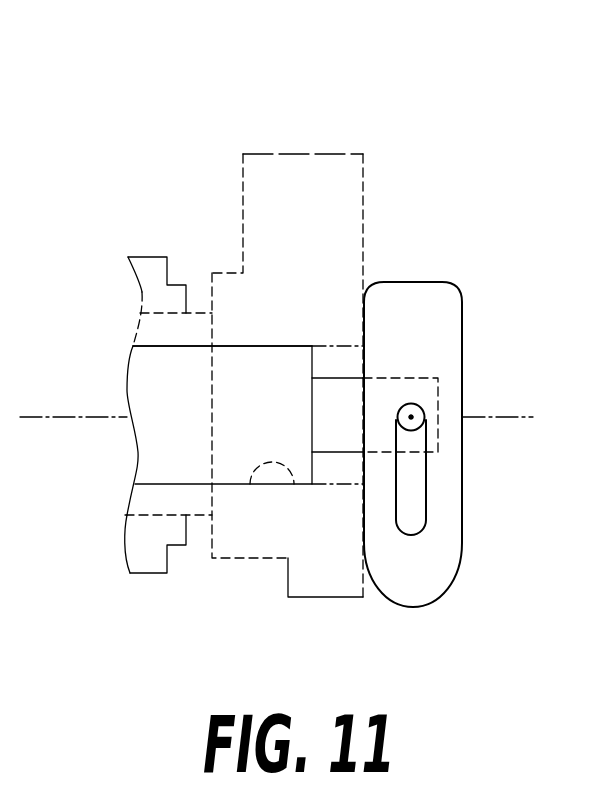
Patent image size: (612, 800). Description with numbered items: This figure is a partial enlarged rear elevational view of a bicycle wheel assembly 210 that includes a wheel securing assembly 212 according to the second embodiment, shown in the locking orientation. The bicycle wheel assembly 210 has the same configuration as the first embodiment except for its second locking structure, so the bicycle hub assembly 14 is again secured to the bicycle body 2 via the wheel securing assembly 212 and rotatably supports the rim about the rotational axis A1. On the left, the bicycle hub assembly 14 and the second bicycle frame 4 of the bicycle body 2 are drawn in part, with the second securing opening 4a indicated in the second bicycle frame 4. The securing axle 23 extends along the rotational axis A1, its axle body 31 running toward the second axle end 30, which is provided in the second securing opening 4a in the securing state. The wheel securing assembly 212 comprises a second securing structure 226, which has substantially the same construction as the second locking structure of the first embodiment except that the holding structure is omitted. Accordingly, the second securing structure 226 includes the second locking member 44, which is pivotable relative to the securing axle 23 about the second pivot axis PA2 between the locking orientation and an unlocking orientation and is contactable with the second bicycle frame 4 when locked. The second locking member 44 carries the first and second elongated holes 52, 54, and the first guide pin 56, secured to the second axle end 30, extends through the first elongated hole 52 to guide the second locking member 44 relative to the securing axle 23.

The bicycle wheel assembly 210 is at (153, 92).
The wheel securing assembly 212 is at (528, 196).
The bicycle body 2 is at (275, 140).
The second bicycle frame 4 is at (243, 171).
The second securing opening 4a is at (250, 484).
The bicycle hub assembly 14 is at (135, 248).
The securing axle 23 is at (117, 386).
The axle body 31 is at (138, 367).
The second axle end 30 is at (422, 376).
The second locking member 44 is at (450, 277).
The second securing structure 226 is at (431, 393).
The first elongated hole 52 is at (478, 477).
The second elongated hole 54 is at (419, 500).
The first guide pin 56 is at (413, 419).
The second pivot axis PA2 is at (412, 416).
The rotational axis A1 is at (518, 417).